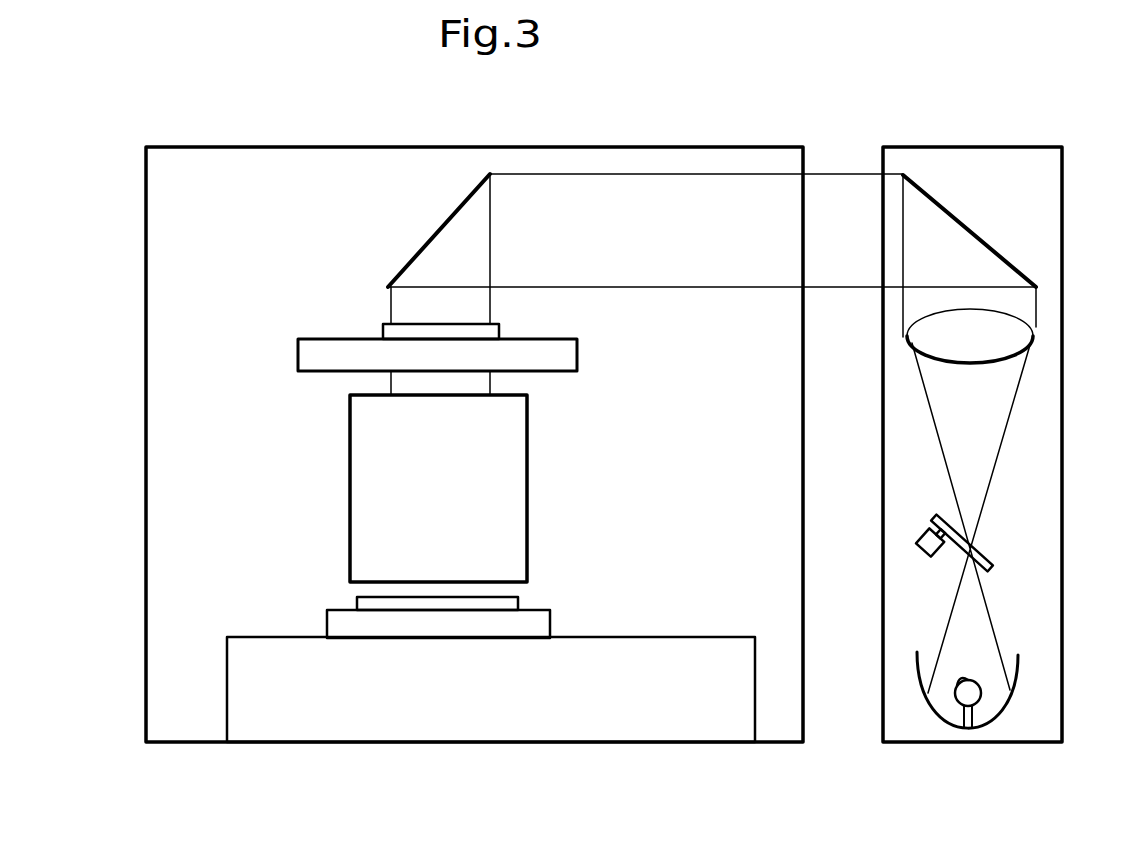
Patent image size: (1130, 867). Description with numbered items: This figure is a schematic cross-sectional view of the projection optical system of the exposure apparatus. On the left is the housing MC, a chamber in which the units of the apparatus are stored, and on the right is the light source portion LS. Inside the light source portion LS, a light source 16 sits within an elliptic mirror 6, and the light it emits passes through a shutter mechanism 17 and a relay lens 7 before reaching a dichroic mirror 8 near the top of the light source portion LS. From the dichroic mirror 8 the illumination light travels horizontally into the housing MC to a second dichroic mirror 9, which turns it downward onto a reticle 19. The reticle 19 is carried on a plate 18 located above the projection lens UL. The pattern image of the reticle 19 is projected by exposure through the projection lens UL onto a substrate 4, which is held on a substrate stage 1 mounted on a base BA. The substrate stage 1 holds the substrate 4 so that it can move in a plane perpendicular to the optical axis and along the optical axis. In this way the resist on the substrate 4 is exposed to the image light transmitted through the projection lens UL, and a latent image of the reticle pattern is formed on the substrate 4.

The housing MC is at (400, 147).
The light source portion LS is at (962, 147).
The dichroic mirror 9 is at (403, 268).
The reticle 19 is at (500, 331).
The reticle stage 18 is at (565, 358).
The projection lens UL is at (515, 527).
The substrate 4 is at (508, 602).
The substrate stage 1 is at (535, 627).
The base BA is at (368, 727).
The dichroic mirror 8 is at (990, 245).
The relay lens 7 is at (1013, 333).
The shutter mechanism 17 is at (983, 557).
The light source 16 is at (975, 690).
The elliptic mirror 6 is at (1018, 667).